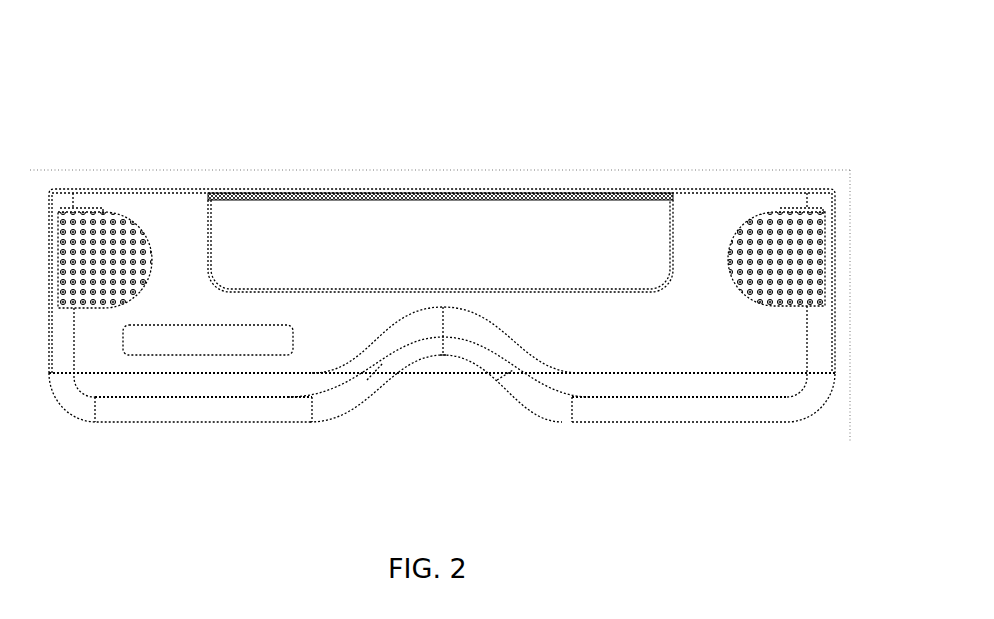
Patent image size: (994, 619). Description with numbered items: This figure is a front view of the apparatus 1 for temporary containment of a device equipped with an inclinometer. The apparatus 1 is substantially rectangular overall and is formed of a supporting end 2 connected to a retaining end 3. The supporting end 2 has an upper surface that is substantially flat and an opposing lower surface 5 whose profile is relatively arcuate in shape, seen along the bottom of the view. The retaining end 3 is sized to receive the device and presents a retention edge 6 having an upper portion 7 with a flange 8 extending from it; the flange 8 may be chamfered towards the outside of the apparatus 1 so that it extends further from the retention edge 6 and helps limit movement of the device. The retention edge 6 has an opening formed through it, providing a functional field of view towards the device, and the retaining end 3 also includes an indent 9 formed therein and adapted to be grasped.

The apparatus 1 is at (117, 99).
The supporting end 2 is at (853, 400).
The retaining end 3 is at (854, 275).
The lower surface 5 is at (344, 421).
The retention edge 6 is at (705, 302).
The upper portion 7 is at (322, 209).
The flange 8 is at (188, 190).
The indent 9 is at (808, 251).